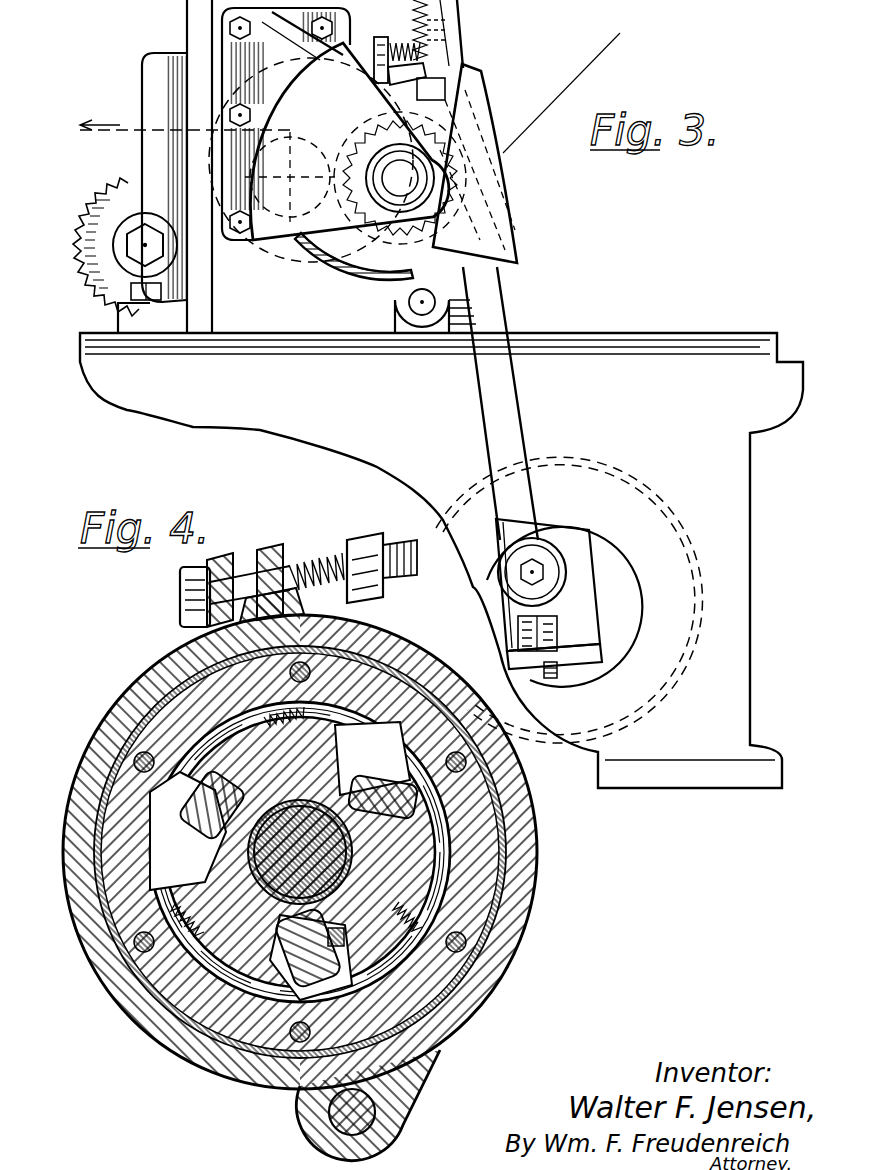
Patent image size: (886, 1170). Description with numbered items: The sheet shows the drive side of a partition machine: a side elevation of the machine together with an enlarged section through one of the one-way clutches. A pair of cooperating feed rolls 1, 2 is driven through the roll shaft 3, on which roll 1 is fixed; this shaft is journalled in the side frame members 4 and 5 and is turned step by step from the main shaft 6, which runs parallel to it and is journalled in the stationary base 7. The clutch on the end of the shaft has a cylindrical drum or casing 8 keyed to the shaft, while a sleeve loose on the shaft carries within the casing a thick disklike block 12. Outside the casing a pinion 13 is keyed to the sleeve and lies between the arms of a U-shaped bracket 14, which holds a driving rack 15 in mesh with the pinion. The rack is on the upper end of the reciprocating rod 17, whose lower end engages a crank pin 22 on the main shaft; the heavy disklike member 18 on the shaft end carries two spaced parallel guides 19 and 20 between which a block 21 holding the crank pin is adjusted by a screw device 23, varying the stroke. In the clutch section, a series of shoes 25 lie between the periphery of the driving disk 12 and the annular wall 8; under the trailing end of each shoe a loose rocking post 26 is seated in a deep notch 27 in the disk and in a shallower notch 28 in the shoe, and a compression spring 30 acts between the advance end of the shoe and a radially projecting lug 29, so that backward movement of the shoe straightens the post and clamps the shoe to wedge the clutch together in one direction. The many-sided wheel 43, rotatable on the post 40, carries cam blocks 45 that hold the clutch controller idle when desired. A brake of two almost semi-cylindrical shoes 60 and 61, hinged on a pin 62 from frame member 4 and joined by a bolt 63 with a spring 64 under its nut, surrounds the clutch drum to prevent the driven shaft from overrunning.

In FIG. 3, the feed roll 1 is at (488, 114).
In FIG. 3, the feed roll 2 is at (268, 252).
In FIG. 3, the roll shaft 3 is at (400, 178).
In FIG. 4, the roll shaft 3 is at (292, 858).
In FIG. 3, the side frame member 4 is at (262, 40).
In FIG. 3, the side frame member 5 is at (155, 76).
In FIG. 3, the main shaft 6 is at (565, 604).
In FIG. 3, the stationary base 7 is at (732, 651).
In FIG. 4, the drum or casing 8 is at (410, 683).
In FIG. 4, the disklike block 12 is at (342, 942).
In FIG. 3, the pinion 13 is at (320, 252).
In FIG. 3, the U-shaped bracket 14 is at (380, 277).
In FIG. 3, the driving rack 15 is at (440, 28).
In FIG. 3, the reciprocating rod 17 is at (505, 398).
In FIG. 3, the disklike member 18 is at (618, 640).
In FIG. 3, the guide 19 is at (483, 556).
In FIG. 3, the guide 20 is at (579, 576).
In FIG. 3, the block 21 is at (560, 626).
In FIG. 3, the crank pin 22 is at (540, 560).
In FIG. 3, the screw device 23 is at (552, 662).
In FIG. 4, the shoe 25 is at (160, 663).
In FIG. 4, the rocking post 26 is at (190, 823).
In FIG. 4, the deep notch 27 is at (210, 860).
In FIG. 4, the shallower notch 28 is at (183, 783).
In FIG. 4, the radially projecting lug 29 is at (393, 636).
In FIG. 4, the compression spring 30 is at (310, 722).
In FIG. 3, the post 40 is at (147, 242).
In FIG. 3, the many-sided wheel 43 is at (110, 212).
In FIG. 3, the cam block 45 is at (80, 228).
In FIG. 3, the brake shoe 60 is at (337, 273).
In FIG. 4, the brake shoe 60 is at (173, 1047).
In FIG. 3, the brake shoe 61 is at (378, 40).
In FIG. 4, the brake shoe 61 is at (488, 980).
In FIG. 3, the pin 62 is at (420, 318).
In FIG. 4, the pin 62 is at (376, 1113).
In FIG. 3, the bolt 63 is at (350, 141).
In FIG. 4, the bolt 63 is at (240, 580).
In FIG. 3, the spring 64 is at (440, 63).
In FIG. 4, the spring 64 is at (305, 548).